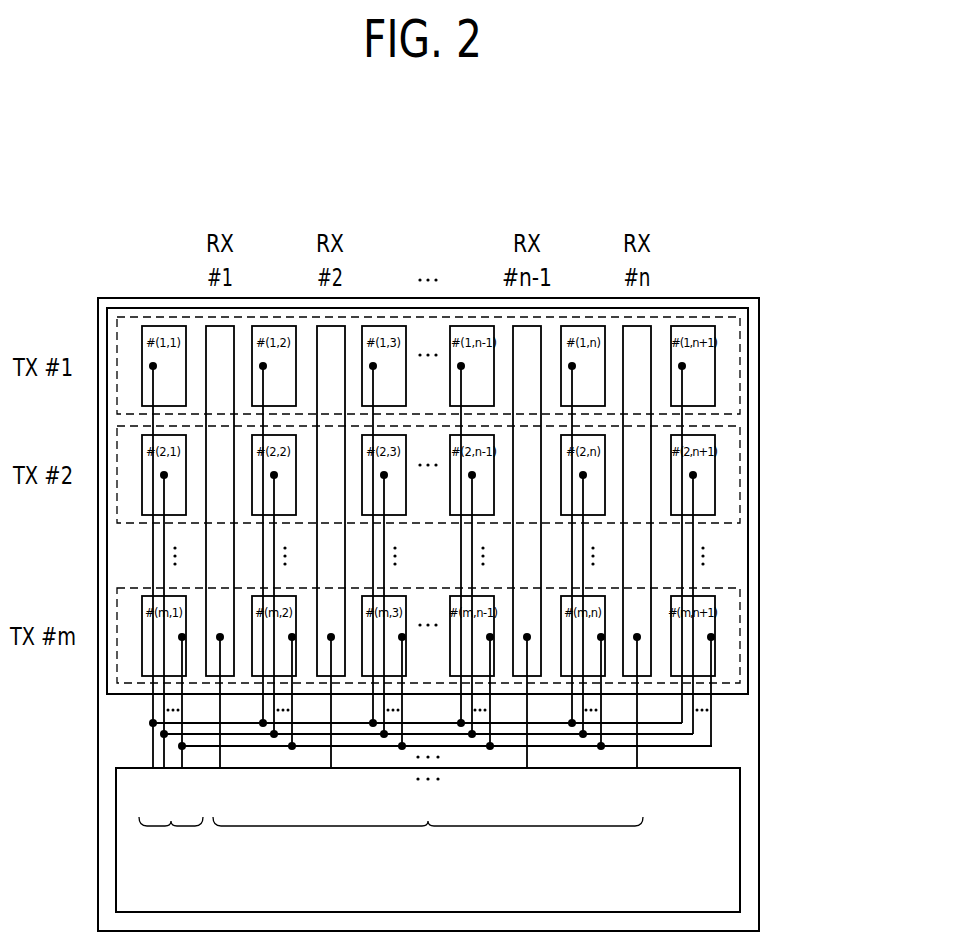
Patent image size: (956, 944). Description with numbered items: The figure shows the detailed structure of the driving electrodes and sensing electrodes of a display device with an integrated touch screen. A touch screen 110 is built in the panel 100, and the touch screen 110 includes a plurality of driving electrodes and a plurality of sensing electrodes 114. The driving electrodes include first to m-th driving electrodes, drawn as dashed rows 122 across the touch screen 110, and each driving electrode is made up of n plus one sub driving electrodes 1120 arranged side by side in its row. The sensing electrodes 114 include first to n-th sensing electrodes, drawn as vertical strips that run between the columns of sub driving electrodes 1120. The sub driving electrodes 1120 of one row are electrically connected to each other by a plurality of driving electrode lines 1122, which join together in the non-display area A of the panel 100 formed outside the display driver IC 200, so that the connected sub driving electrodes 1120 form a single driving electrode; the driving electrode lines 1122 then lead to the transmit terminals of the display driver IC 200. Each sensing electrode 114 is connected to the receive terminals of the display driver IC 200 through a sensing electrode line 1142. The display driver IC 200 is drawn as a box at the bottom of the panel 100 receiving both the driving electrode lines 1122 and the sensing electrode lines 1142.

The panel 100 is at (759, 373).
The touch screen 110 is at (748, 473).
The TX electrode row group 122 is at (115, 331).
The sub driving electrode 1120 is at (168, 326).
The sensing electrode 114 is at (225, 326).
The driving electrode line 1122 is at (152, 563).
The sensing electrode line 1142 is at (222, 707).
The non-display area A is at (745, 738).
The display driver IC 200 is at (740, 858).